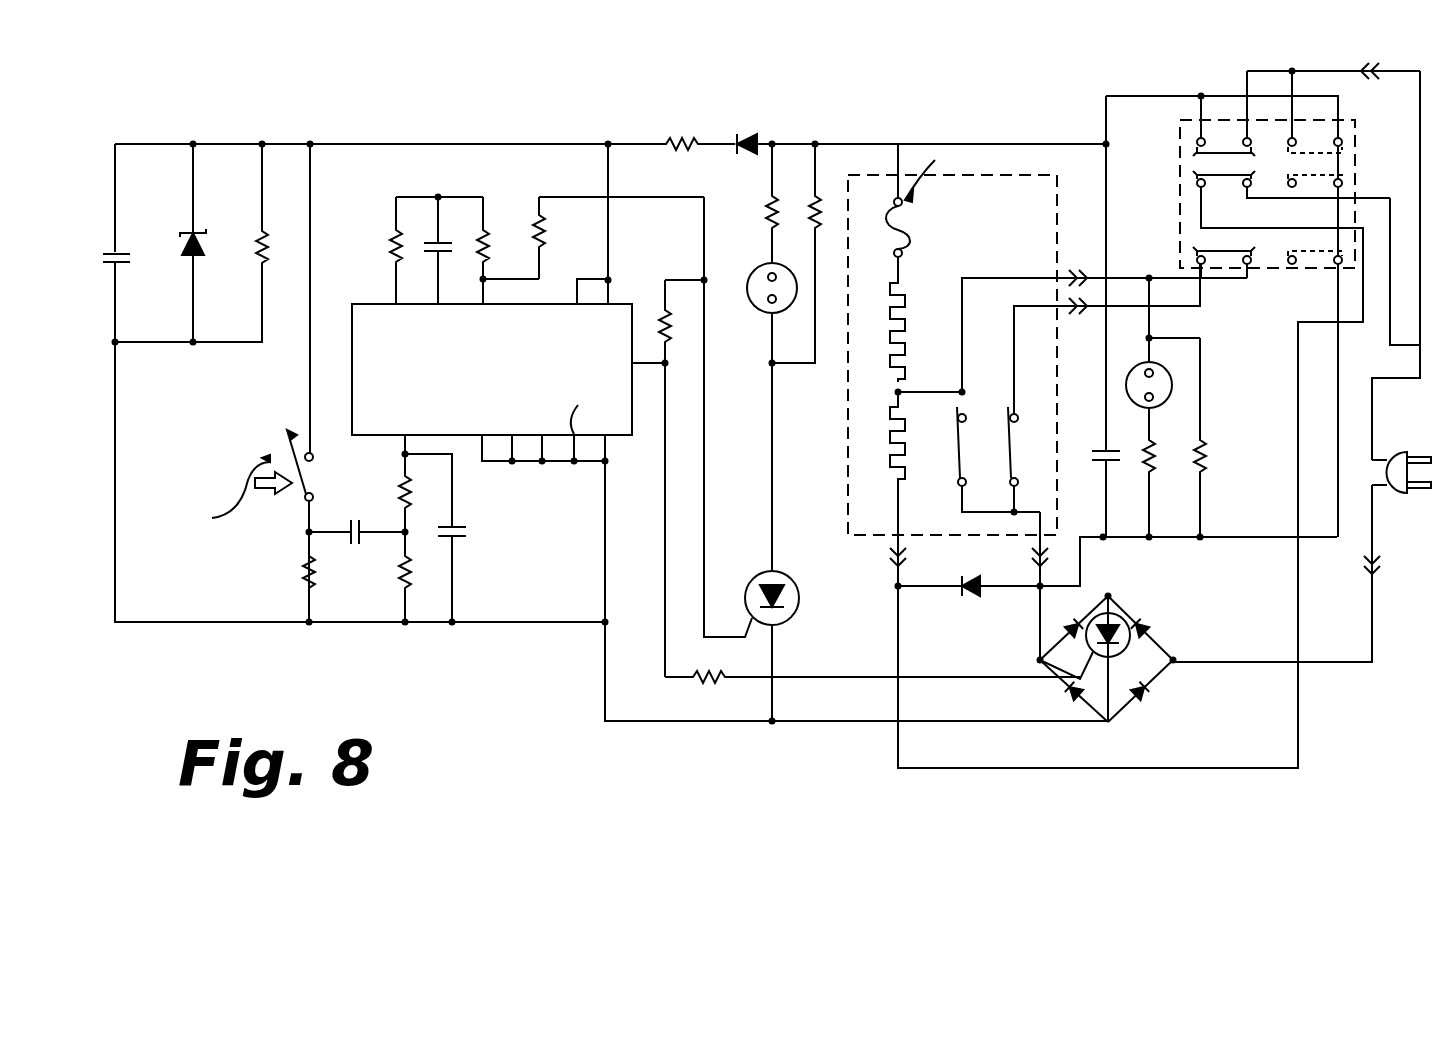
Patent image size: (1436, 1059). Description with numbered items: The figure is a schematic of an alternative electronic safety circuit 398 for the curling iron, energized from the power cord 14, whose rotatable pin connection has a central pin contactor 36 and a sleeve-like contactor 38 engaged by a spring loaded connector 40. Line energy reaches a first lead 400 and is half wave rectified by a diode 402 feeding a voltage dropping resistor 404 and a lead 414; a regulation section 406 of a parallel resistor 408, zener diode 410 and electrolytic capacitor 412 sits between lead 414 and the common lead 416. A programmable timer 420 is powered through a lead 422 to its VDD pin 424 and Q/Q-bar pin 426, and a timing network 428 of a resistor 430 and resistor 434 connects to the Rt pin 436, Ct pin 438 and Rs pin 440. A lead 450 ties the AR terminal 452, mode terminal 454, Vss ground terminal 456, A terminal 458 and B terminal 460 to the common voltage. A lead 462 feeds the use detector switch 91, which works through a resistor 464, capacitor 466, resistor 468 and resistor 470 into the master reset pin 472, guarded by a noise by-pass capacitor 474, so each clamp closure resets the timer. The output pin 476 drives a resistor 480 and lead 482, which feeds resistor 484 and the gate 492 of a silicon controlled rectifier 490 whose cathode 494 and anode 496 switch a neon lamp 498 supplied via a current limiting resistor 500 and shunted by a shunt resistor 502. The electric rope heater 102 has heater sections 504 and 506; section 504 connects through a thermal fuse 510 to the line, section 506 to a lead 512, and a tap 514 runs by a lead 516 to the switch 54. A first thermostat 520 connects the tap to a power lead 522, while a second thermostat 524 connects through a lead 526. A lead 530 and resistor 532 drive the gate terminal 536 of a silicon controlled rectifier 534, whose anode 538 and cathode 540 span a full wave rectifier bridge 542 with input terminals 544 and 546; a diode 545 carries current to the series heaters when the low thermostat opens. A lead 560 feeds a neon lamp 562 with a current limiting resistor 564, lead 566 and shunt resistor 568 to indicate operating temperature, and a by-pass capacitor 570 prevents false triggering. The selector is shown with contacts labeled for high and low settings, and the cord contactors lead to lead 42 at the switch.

The power cord 14 is at (1388, 450).
The central pin contactor 36 is at (1374, 528).
The sleeve-like contactor 38 is at (1405, 71).
The spring loaded connector 40 is at (1374, 608).
The conductor 42 is at (1318, 71).
The switch 54 is at (1358, 140).
The switch 91 is at (300, 497).
The electric rope heater 102 is at (878, 350).
The circuit 398 is at (1150, 92).
The first lead 400 is at (962, 144).
The diode 402 is at (750, 142).
The voltage dropping resistor 404 is at (688, 144).
The regulation section 406 is at (262, 200).
The resistor 408 is at (262, 238).
The zener diode 410 is at (205, 248).
The electrolytic capacitor 412 is at (130, 257).
The lead 414 is at (432, 144).
The common lead 416 is at (213, 622).
The programmable timer 420 is at (552, 302).
The lead 422 is at (610, 222).
The VDD pin 424 is at (608, 293).
The Q/Q-bar pin 426 is at (608, 262).
The timing network 428 is at (460, 197).
The resistor 430 is at (510, 222).
The resistor 434 is at (393, 242).
The Rt pin 436 is at (485, 298).
The Ct pin 438 is at (460, 285).
The Rs pin 440 is at (394, 285).
The lead 450 is at (635, 580).
The AR terminal 452 is at (610, 470).
The mode terminal 454 is at (576, 460).
The Vss ground terminal 456 is at (544, 458).
The A terminal 458 is at (514, 460).
The B terminal 460 is at (484, 458).
The lead 462 is at (308, 416).
The resistor 464 is at (305, 573).
The capacitor 466 is at (360, 528).
The resistor 468 is at (402, 573).
The resistor 470 is at (402, 490).
The master reset pin 472 is at (403, 454).
The noise by-pass capacitor 474 is at (460, 533).
The output pin 476 is at (607, 437).
The resistor 480 is at (668, 325).
The lead 482 is at (436, 240).
The resistor 484 is at (542, 240).
The silicon controlled rectifier 490 is at (800, 600).
The gate 492 is at (748, 615).
The cathode 494 is at (773, 648).
The anode 496 is at (772, 518).
The neon lamp 498 is at (752, 278).
The current limiting resistor 500 is at (768, 213).
The shunt resistor 502 is at (818, 213).
The heater section 504 is at (905, 290).
The heater section 506 is at (905, 475).
The thermal fuse 510 is at (906, 226).
The lead 512 is at (985, 768).
The tap 514 is at (920, 392).
The lead 516 is at (1020, 278).
The first thermostat 520 is at (985, 450).
The power lead 522 is at (1033, 572).
The second thermostat 524 is at (1040, 450).
The lead 526 is at (1012, 364).
The lead 530 is at (685, 510).
The resistor 532 is at (715, 690).
The silicon controlled rectifier 534 is at (1148, 628).
The gate terminal 536 is at (1068, 645).
The anode 538 is at (1120, 618).
The cathode 540 is at (1112, 700).
The full wave rectifier bridge 542 is at (1168, 683).
The input terminal 544 is at (1035, 660).
The diode 545 is at (960, 596).
The input terminal 546 is at (1178, 658).
The lead 560 is at (1152, 323).
The neon lamp 562 is at (1174, 385).
The current limiting resistor 564 is at (1155, 472).
The lead 566 is at (1182, 537).
The shunt resistor 568 is at (1205, 452).
The by-pass capacitor 570 is at (1098, 452).